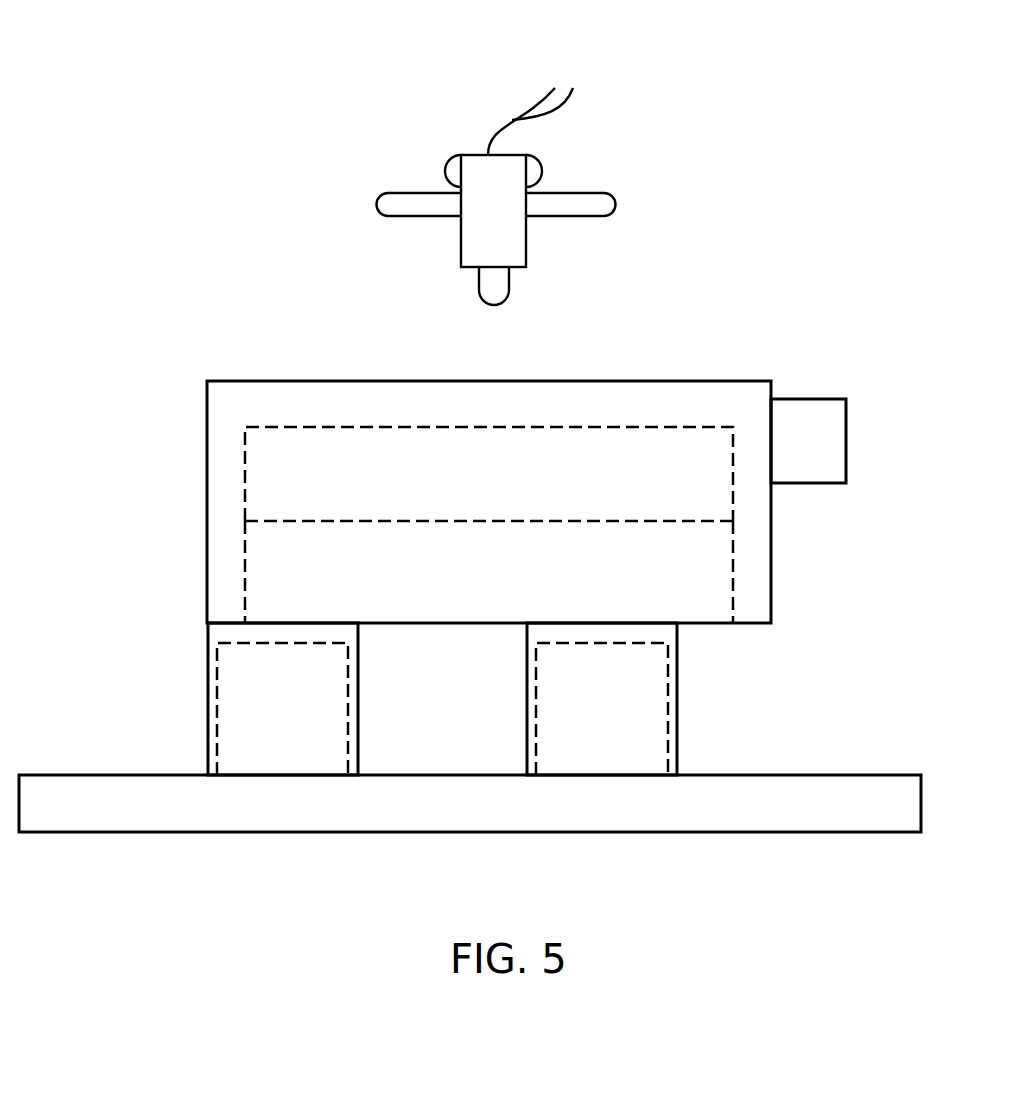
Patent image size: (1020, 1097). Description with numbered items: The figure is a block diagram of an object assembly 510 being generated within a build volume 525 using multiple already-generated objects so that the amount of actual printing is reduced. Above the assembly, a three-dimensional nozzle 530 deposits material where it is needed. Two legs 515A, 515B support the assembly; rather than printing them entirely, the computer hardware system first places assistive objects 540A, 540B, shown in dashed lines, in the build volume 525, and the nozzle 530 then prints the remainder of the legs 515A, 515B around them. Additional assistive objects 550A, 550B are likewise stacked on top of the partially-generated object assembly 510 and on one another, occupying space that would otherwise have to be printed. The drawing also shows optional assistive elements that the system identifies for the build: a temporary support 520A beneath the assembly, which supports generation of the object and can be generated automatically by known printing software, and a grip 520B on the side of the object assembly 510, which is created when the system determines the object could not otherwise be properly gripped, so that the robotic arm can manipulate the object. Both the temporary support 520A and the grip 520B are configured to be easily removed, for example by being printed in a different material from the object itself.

The build volume 525 is at (246, 49).
The 3D nozzle 530 is at (614, 204).
The object assembly 510 is at (207, 422).
The grip 520B is at (846, 436).
The temporary support 520A is at (868, 832).
The leg 515A is at (208, 693).
The leg 515B is at (527, 693).
The assistive object 540A is at (282, 709).
The assistive object 540B is at (602, 709).
The assistive object 550A is at (489, 572).
The assistive object 550B is at (489, 474).